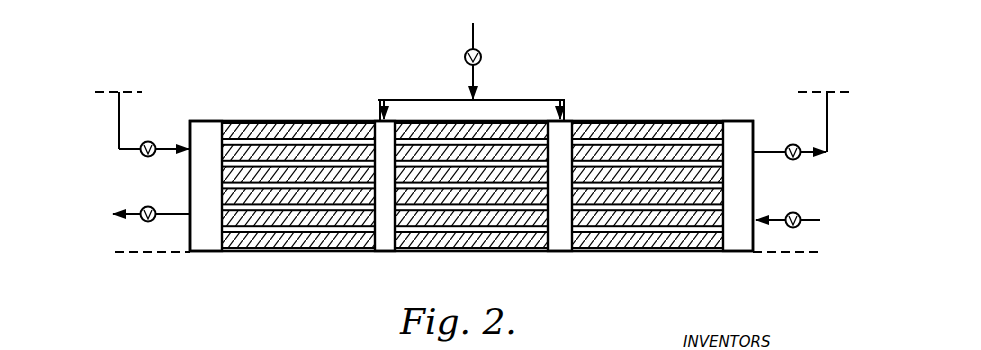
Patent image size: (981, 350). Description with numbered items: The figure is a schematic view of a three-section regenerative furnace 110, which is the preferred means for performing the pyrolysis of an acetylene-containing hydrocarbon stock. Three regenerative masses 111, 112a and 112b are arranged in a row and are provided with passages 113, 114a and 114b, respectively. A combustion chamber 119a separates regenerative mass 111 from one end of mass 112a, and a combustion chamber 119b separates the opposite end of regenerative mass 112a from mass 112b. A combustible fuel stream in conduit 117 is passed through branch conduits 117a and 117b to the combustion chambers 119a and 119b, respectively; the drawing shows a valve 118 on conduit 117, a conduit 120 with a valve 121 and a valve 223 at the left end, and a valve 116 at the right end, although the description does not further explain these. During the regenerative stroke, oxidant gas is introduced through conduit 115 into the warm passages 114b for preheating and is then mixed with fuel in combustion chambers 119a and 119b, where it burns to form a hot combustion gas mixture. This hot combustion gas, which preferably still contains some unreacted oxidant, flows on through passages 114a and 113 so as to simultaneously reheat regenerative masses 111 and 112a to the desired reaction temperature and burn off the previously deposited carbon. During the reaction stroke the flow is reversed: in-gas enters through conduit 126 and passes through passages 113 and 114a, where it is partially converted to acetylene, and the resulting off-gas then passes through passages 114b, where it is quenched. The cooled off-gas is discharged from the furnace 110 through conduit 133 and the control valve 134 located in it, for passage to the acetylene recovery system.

The furnace 110 is at (297, 117).
The regenerative mass 111 is at (283, 248).
The regenerative mass 112a is at (471, 193).
The regenerative mass 112b is at (647, 187).
The passages 113 is at (339, 162).
The passages 114a is at (440, 160).
The passages 114b is at (689, 162).
The conduit 115 is at (818, 220).
The valve 116 is at (798, 212).
The conduit 117 is at (478, 71).
The branch conduit 117a is at (400, 100).
The branch conduit 117b is at (552, 100).
The valve 118 is at (482, 54).
The combustion chamber 119a is at (383, 250).
The combustion chamber 119b is at (562, 251).
The outlet conduit 120 is at (160, 206).
The valve 121 is at (155, 221).
The conduit 126 is at (119, 117).
The conduit 133 is at (828, 133).
The control valve 134 is at (791, 143).
The valve 223 is at (151, 142).